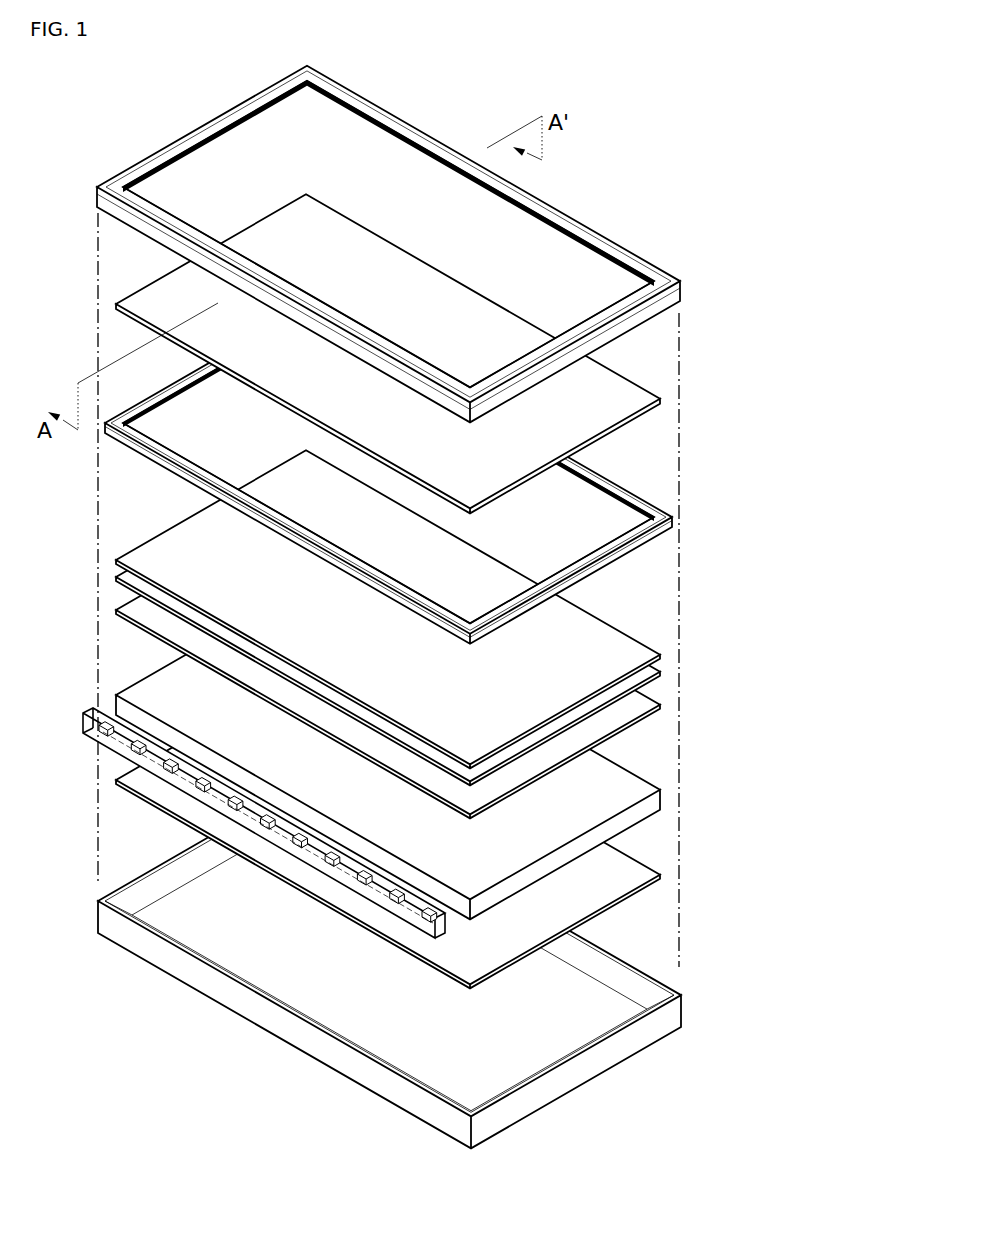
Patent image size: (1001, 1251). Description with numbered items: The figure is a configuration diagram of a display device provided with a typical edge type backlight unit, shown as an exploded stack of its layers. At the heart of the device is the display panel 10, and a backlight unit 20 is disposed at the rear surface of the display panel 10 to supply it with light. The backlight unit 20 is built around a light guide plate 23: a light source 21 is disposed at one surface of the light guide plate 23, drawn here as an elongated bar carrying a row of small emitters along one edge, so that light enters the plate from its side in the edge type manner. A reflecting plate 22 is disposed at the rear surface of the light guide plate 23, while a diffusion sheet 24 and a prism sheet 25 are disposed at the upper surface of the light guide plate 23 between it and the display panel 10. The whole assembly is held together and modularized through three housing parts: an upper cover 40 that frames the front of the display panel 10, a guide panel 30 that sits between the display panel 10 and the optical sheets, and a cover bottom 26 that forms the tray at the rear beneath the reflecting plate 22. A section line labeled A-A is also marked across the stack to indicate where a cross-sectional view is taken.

The display panel 10 is at (655, 432).
The backlight unit 20 is at (753, 644).
The light source 21 is at (447, 929).
The reflecting plate 22 is at (630, 882).
The light guide plate 23 is at (630, 812).
The diffusion sheet 24 is at (630, 715).
The prism sheet 25 is at (630, 673).
The cover bottom 26 is at (630, 1030).
The guide panel 30 is at (670, 546).
The upper cover 40 is at (665, 325).